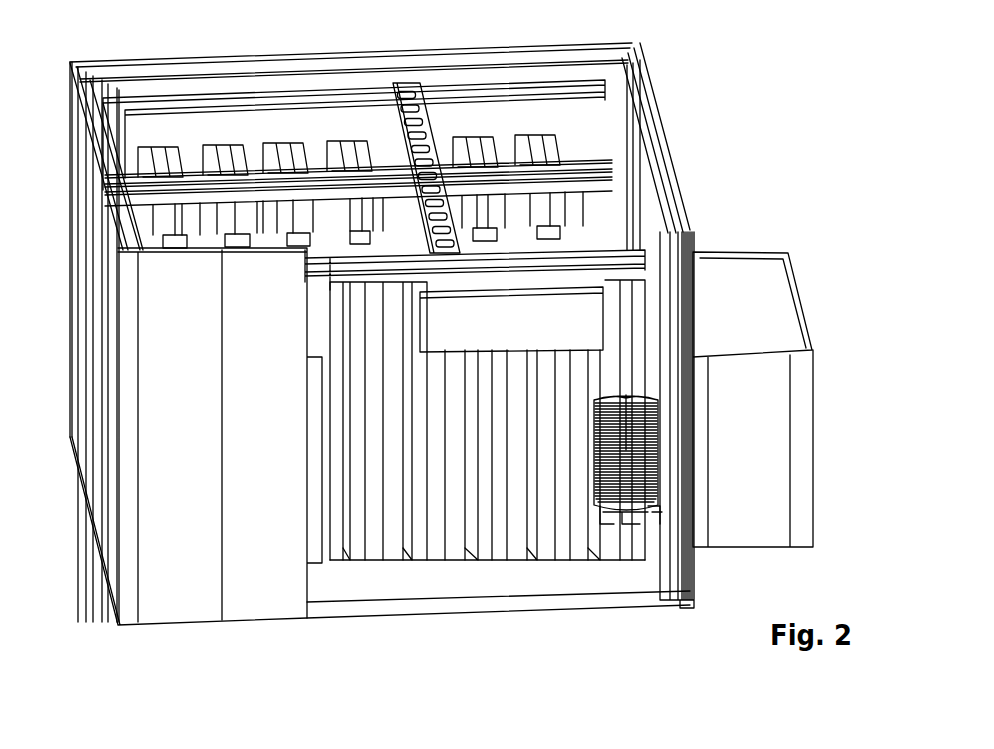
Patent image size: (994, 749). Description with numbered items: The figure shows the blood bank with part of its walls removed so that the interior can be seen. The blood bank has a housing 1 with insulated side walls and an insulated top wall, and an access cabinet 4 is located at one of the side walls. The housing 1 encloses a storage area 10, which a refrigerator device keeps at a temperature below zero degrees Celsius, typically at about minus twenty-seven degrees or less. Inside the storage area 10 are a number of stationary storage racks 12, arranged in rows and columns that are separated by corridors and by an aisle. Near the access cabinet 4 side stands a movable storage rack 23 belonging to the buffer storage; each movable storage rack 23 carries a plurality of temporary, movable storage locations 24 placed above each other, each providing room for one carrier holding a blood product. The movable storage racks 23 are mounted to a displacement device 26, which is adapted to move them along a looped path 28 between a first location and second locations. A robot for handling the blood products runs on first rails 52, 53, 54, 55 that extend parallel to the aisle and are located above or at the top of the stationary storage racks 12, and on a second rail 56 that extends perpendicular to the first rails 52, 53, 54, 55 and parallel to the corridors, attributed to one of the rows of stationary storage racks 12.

The housing 1 is at (707, 167).
The access cabinet 4 is at (775, 297).
The storage area 10 is at (621, 74).
The stationary storage rack 12 is at (207, 147).
The movable storage rack 23 is at (627, 403).
The movable storage location 24 is at (610, 498).
The displacement device 26 is at (657, 512).
The looped path 28 is at (632, 500).
The first rail 52 is at (607, 252).
The first rail 53 is at (602, 177).
The first rail 54 is at (573, 160).
The first rail 55 is at (138, 100).
The second rail 56 is at (418, 88).